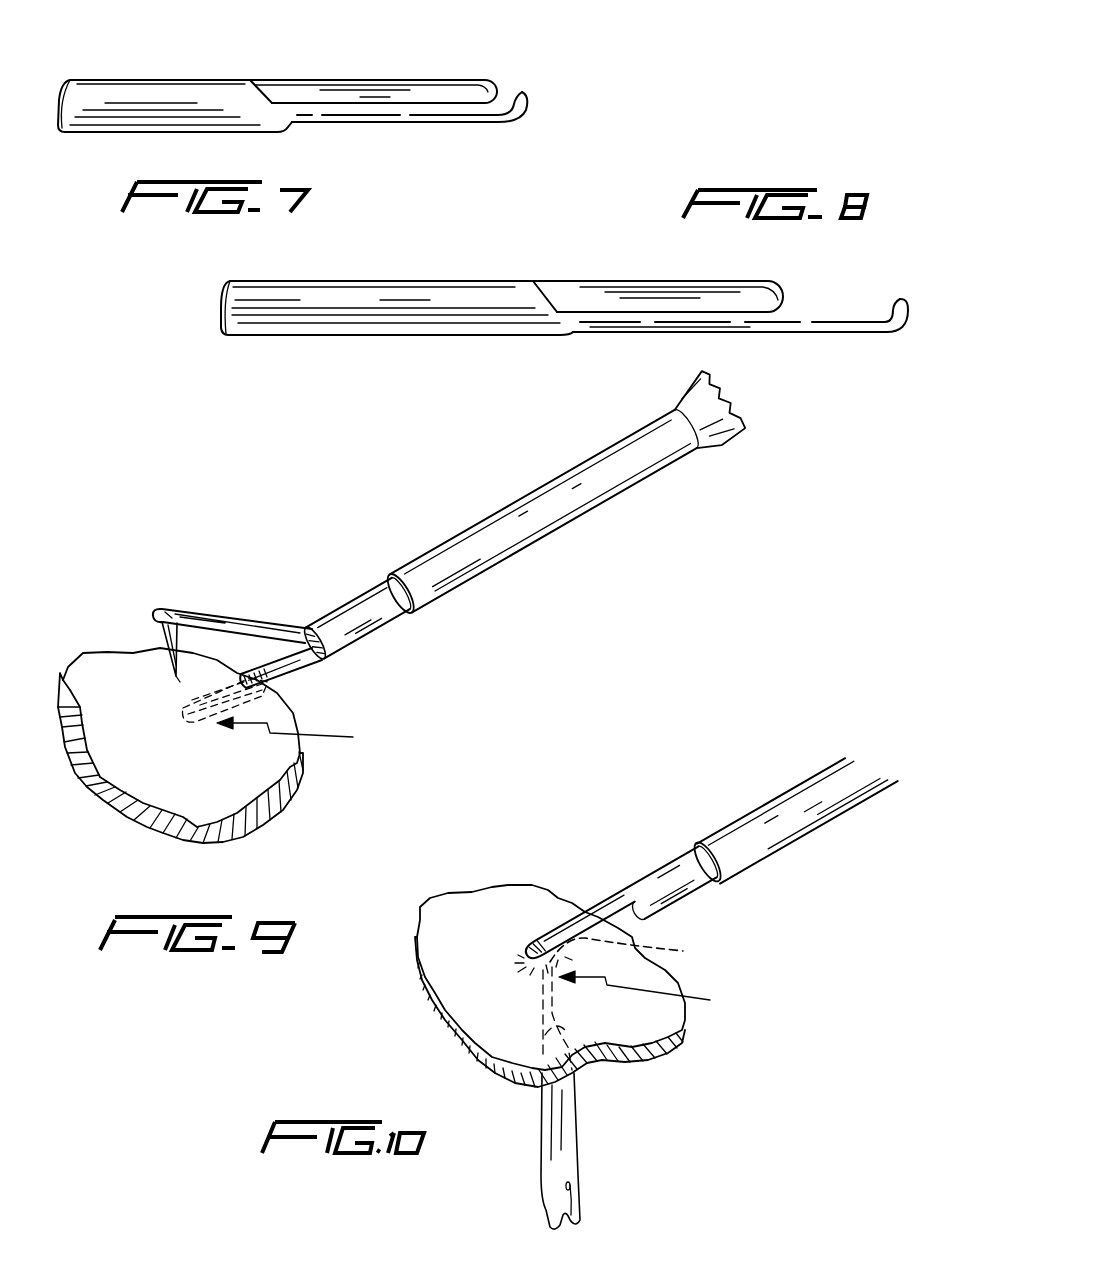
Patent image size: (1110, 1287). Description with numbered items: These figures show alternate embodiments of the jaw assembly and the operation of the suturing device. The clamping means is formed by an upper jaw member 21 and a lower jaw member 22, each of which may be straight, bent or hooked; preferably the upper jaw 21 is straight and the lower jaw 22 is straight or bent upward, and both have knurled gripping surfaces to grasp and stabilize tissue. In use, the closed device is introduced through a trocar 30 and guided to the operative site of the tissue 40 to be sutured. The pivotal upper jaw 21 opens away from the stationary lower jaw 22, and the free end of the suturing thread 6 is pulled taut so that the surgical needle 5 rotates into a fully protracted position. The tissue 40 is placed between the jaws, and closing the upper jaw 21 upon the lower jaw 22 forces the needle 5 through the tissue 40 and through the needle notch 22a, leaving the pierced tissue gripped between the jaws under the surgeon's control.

In FIG. 9, the surgical needle 5 is at (157, 645).
In FIG. 9, the suturing thread 6 is at (157, 621).
In FIG. 7, the upper jaw member 21 is at (410, 90).
In FIG. 8, the upper jaw member 21 is at (637, 287).
In FIG. 9, the upper jaw member 21 is at (207, 614).
In FIG. 10, the upper jaw member 21 is at (615, 905).
In FIG. 7, the lower jaw member 22 is at (425, 115).
In FIG. 8, the lower jaw member 22 is at (768, 322).
In FIG. 9, the lower jaw member 22 is at (287, 680).
In FIG. 10, the lower jaw member 22 is at (635, 955).
In FIG. 9, the needle notch 22a is at (280, 664).
In FIG. 9, the trocar 30 is at (443, 547).
In FIG. 10, the trocar 30 is at (770, 798).
In FIG. 9, the tissue 40 is at (301, 737).
In FIG. 10, the tissue 40 is at (650, 994).